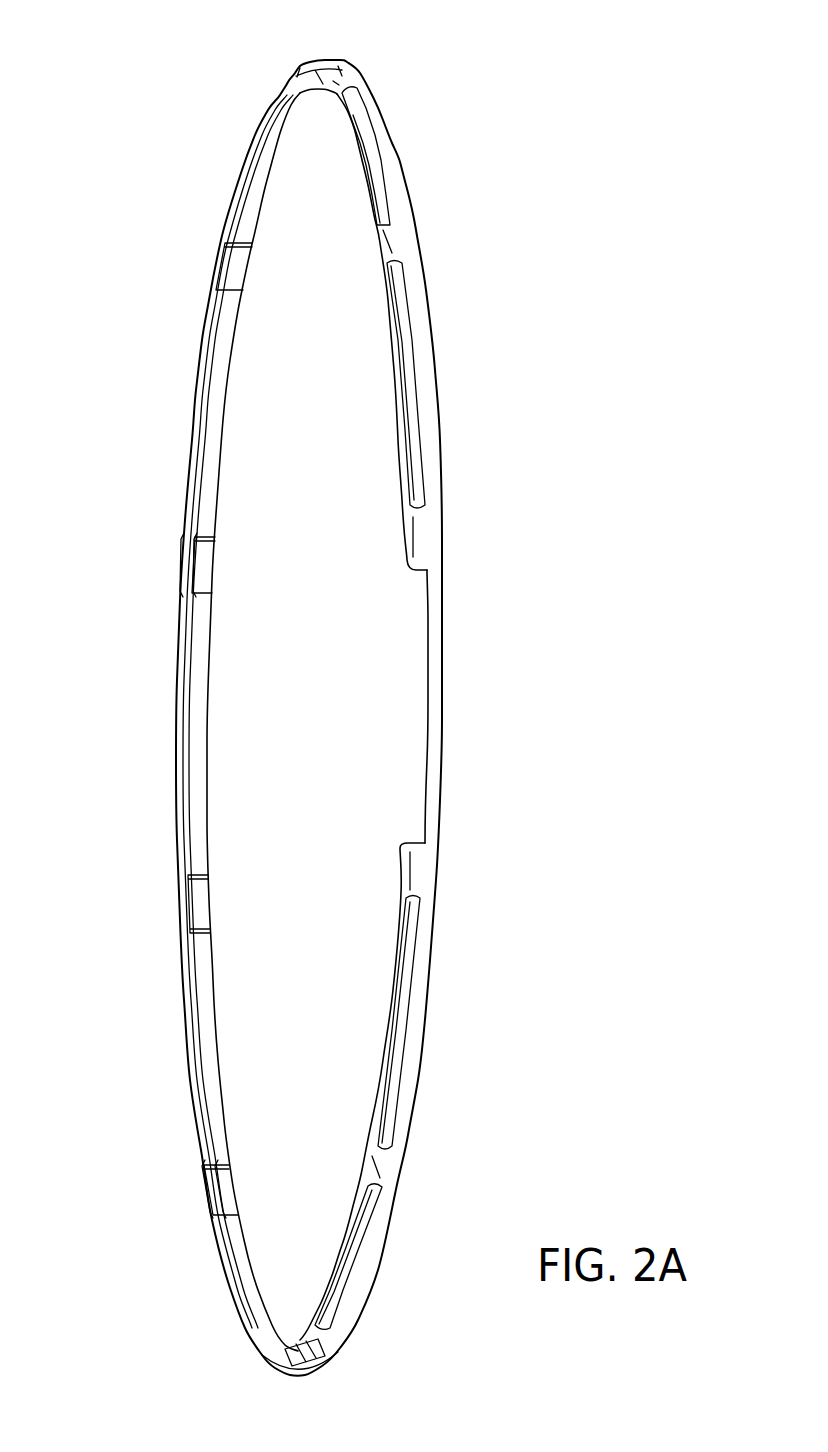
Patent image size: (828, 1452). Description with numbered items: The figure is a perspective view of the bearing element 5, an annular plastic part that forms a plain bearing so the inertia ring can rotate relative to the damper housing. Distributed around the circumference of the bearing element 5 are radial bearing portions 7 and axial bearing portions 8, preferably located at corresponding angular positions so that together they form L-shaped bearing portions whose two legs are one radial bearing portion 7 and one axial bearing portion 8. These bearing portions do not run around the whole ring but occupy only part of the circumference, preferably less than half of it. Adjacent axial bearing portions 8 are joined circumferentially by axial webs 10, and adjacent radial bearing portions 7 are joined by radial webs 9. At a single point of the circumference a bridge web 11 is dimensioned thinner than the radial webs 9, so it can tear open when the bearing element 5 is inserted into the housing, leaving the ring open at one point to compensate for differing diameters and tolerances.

The bearing element 5 is at (346, 62).
The radial bearing portion 7 is at (407, 242).
The axial bearing portion 8 is at (381, 247).
The radial web 9 is at (388, 147).
The axial web 10 is at (355, 174).
The bridge web 11 is at (438, 664).